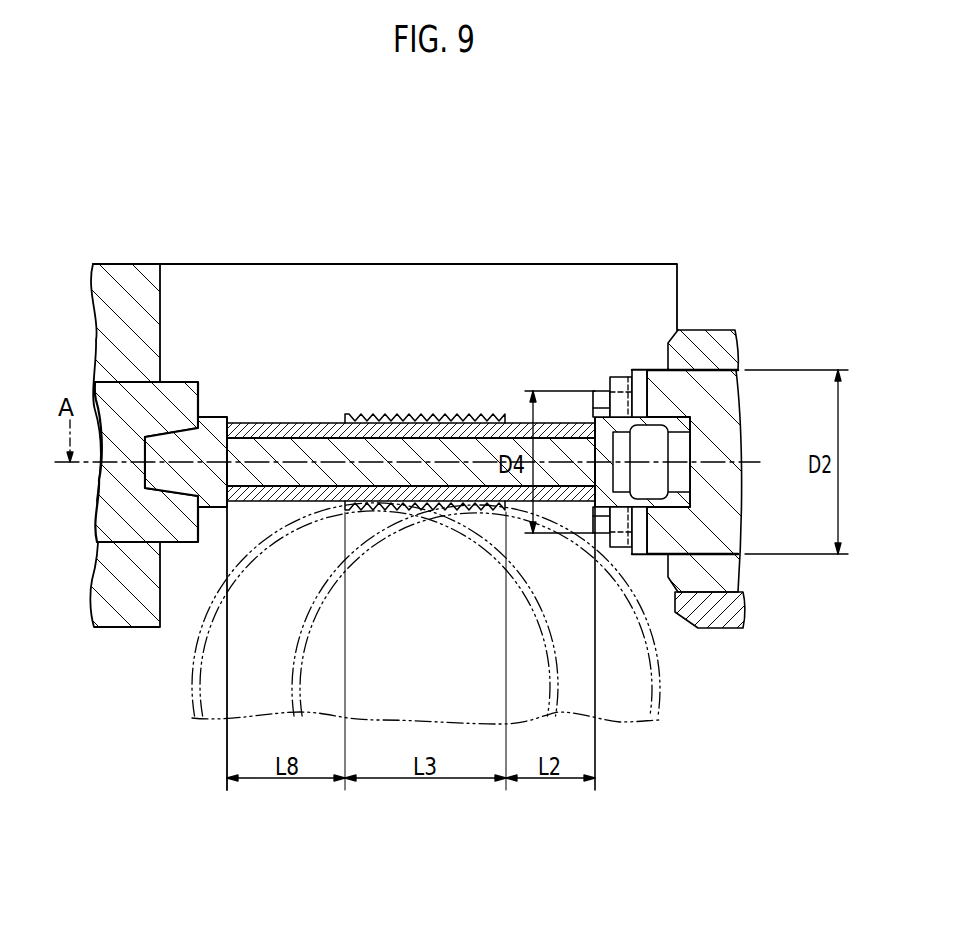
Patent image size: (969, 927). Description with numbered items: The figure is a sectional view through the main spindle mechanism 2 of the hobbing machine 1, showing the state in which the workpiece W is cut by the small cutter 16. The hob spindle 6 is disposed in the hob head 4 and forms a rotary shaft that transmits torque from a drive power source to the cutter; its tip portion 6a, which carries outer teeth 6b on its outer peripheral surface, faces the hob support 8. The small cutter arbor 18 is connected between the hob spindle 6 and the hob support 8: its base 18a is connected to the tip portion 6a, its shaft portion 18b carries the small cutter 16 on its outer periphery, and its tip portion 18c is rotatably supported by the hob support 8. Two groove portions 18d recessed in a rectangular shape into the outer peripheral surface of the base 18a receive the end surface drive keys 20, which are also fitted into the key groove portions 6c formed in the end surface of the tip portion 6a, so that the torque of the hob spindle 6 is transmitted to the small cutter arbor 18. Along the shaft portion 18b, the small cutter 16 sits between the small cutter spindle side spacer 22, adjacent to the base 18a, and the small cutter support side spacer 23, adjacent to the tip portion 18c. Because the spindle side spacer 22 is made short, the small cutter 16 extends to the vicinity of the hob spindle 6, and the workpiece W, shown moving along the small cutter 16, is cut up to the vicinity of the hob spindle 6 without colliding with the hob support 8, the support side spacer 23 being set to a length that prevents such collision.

The hobbing machine 1 is at (302, 248).
The main spindle mechanism 2 is at (590, 375).
The hob head 4 is at (697, 347).
The hob spindle 6 is at (718, 387).
The tip portion 6a is at (658, 395).
The outer teeth 6b is at (640, 376).
The key groove portions 6c is at (650, 528).
The hob support 8 is at (176, 523).
The small cutter 16 is at (441, 415).
The small cutter arbor 18 is at (302, 450).
The base 18a is at (592, 413).
The shaft portion 18b is at (396, 440).
The tip portion 18c is at (174, 447).
The groove portions 18d is at (600, 395).
The end surface drive keys 20 is at (622, 378).
The small cutter spindle side spacer 22 is at (516, 427).
The small cutter support side spacer 23 is at (256, 433).
The workpiece W is at (192, 686).